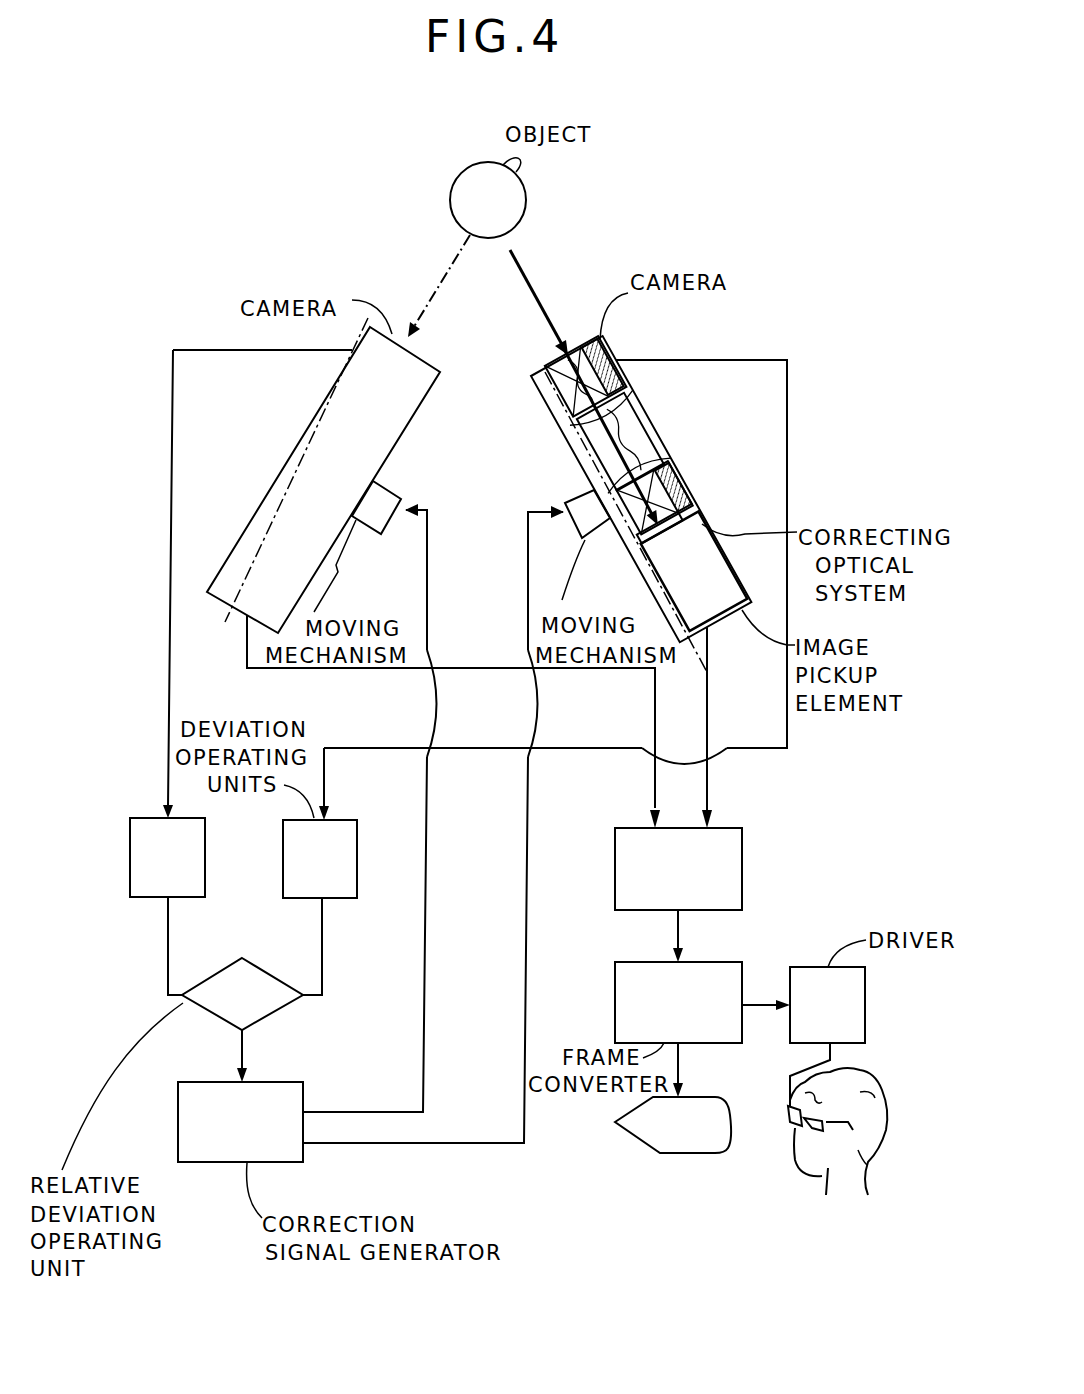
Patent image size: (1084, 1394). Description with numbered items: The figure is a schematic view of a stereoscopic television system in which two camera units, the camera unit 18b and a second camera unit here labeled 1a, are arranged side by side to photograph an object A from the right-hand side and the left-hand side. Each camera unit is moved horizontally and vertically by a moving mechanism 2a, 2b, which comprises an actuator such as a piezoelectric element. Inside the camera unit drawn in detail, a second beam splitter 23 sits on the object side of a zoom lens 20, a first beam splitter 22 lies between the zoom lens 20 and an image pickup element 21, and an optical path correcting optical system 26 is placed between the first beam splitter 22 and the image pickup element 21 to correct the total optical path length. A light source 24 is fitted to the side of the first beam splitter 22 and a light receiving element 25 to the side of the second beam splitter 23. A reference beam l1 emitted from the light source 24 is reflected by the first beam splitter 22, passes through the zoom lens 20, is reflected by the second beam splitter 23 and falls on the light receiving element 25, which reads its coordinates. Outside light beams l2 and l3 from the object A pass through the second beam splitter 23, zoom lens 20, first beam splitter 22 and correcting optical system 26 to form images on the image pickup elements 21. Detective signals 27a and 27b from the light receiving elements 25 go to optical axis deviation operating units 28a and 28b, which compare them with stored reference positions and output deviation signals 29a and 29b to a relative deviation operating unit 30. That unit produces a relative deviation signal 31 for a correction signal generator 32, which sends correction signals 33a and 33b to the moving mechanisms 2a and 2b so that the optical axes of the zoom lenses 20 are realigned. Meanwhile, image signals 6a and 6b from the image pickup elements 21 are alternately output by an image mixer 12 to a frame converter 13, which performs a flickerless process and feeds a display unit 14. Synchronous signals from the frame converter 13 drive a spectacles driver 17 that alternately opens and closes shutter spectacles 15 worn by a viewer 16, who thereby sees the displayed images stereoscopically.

The object A is at (520, 192).
The camera 1a is at (572, 478).
The camera unit 18b is at (484, 445).
The moving mechanism 2a is at (579, 553).
The moving mechanism 2b is at (368, 535).
The first beam splitter 22 is at (617, 537).
The image signal 6a is at (707, 714).
The image signal 6b is at (655, 694).
The image mixer 12 is at (742, 870).
The frame converter 13 is at (722, 968).
The display unit 14 is at (714, 1100).
The shutter spectacles 15 is at (786, 1120).
The viewer 16 is at (872, 1092).
The spectacles driver 17 is at (853, 1014).
The zoom lens 20 is at (626, 425).
The image pickup element 21 is at (712, 566).
The second beam splitter 23 is at (548, 374).
The light source 24 is at (690, 488).
The light receiving element 25 is at (614, 350).
The optical path correcting optical system 26 is at (682, 530).
The detective signal 27a is at (787, 484).
The detective signal 27b is at (172, 428).
The optical axis deviation operating unit 28a is at (357, 857).
The optical axis deviation operating unit 28b is at (131, 862).
The deviation signal 29a is at (322, 925).
The deviation signal 29b is at (168, 952).
The relative deviation operating unit 30 is at (282, 1003).
The relative deviation signal 31 is at (240, 1055).
The correction signal generator 32 is at (179, 1134).
The correction signal 33a is at (402, 1147).
The correction signal 33b is at (383, 1110).
The reference beam l1 is at (655, 450).
The outside light beam l2 is at (545, 302).
The outside light beam l3 is at (425, 312).